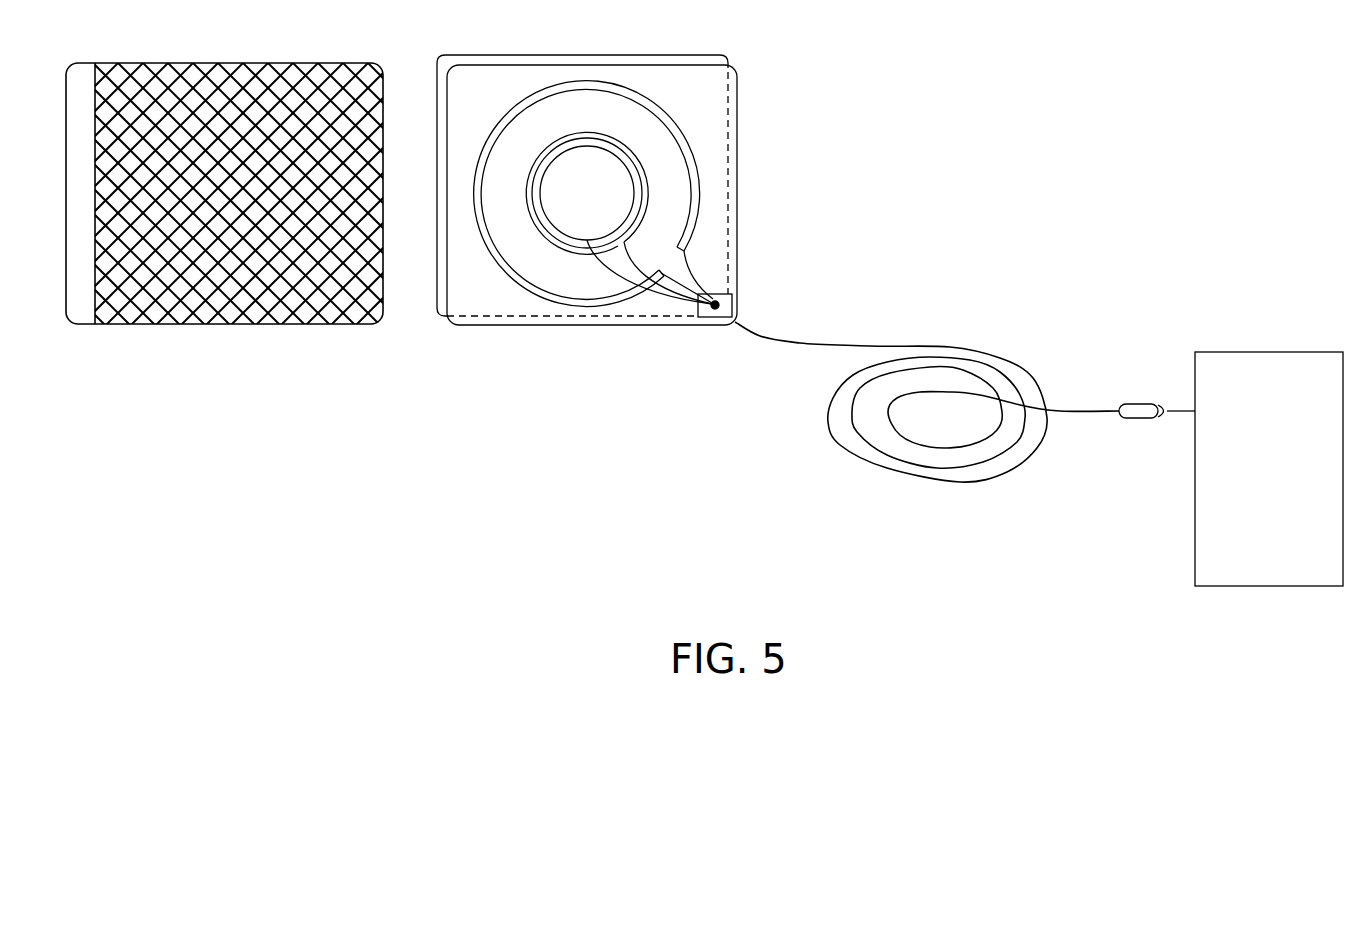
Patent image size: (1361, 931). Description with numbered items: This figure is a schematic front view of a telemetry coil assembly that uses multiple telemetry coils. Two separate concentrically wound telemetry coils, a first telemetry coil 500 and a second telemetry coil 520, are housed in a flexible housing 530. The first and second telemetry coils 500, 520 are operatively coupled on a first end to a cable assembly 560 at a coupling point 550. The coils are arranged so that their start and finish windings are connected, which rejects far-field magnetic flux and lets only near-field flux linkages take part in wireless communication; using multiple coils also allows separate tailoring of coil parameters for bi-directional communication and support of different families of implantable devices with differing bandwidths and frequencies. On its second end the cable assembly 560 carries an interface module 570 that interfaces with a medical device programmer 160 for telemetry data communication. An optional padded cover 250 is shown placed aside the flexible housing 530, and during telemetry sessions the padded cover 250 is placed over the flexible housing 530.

The padded cover 250 is at (247, 62).
The flexible housing 530 is at (545, 56).
The first telemetry coil 500 is at (699, 170).
The second telemetry coil 520 is at (646, 212).
The coupling point 550 is at (731, 293).
The cable assembly 560 is at (861, 482).
The interface module 570 is at (1146, 400).
The medical device programmer 160 is at (1298, 352).